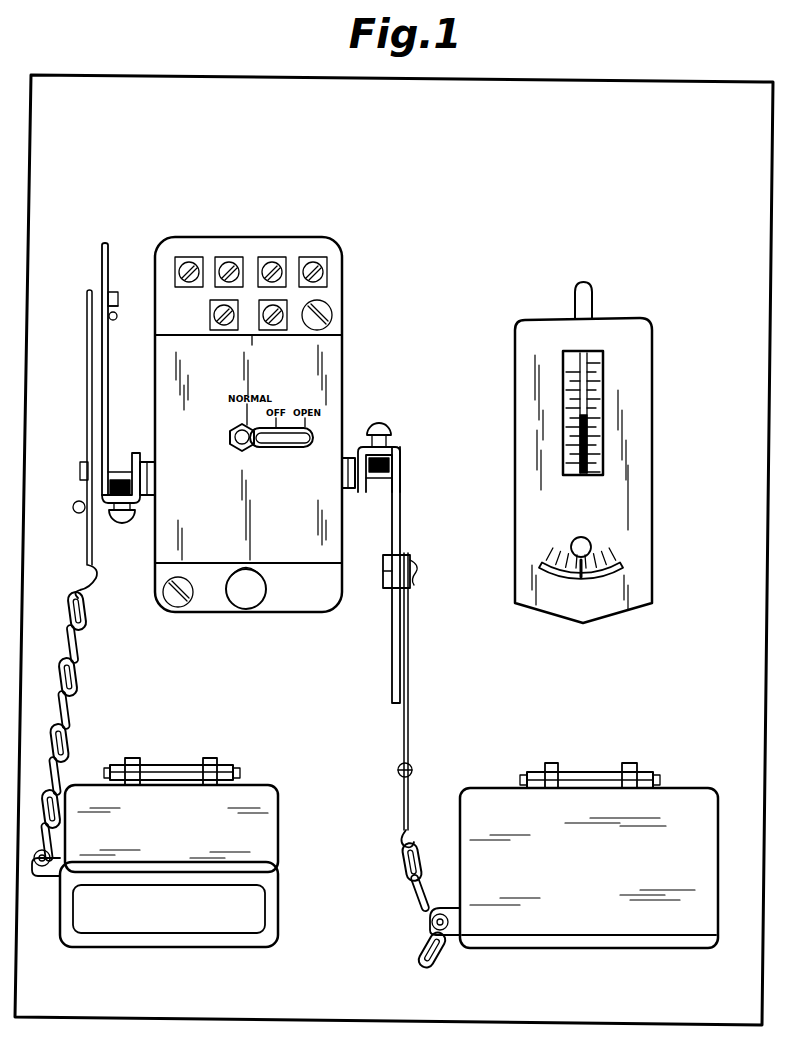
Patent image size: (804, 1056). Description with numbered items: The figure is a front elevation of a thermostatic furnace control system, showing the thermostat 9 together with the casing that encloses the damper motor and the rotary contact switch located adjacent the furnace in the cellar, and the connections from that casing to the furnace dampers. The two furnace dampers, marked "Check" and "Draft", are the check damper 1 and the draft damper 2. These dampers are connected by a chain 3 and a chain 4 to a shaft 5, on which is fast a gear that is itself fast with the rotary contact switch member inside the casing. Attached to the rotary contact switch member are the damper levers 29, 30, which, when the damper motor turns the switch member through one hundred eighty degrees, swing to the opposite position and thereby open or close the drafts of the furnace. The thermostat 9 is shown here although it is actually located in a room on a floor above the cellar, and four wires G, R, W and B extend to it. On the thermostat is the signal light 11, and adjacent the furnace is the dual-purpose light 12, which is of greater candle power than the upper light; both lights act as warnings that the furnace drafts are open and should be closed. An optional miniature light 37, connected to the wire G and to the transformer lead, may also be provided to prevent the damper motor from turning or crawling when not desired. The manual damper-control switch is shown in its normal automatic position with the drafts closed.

The check damper 1 is at (255, 893).
The draft damper 2 is at (705, 891).
The chain 3 is at (77, 703).
The chain 4 is at (415, 833).
The shaft 5 is at (113, 470).
The thermostat 9 is at (635, 490).
The signal light 11 is at (597, 297).
The dual-purpose light 12 is at (268, 592).
The damper lever 29 is at (108, 398).
The damper lever 30 is at (397, 539).
The miniature light 37 is at (252, 289).